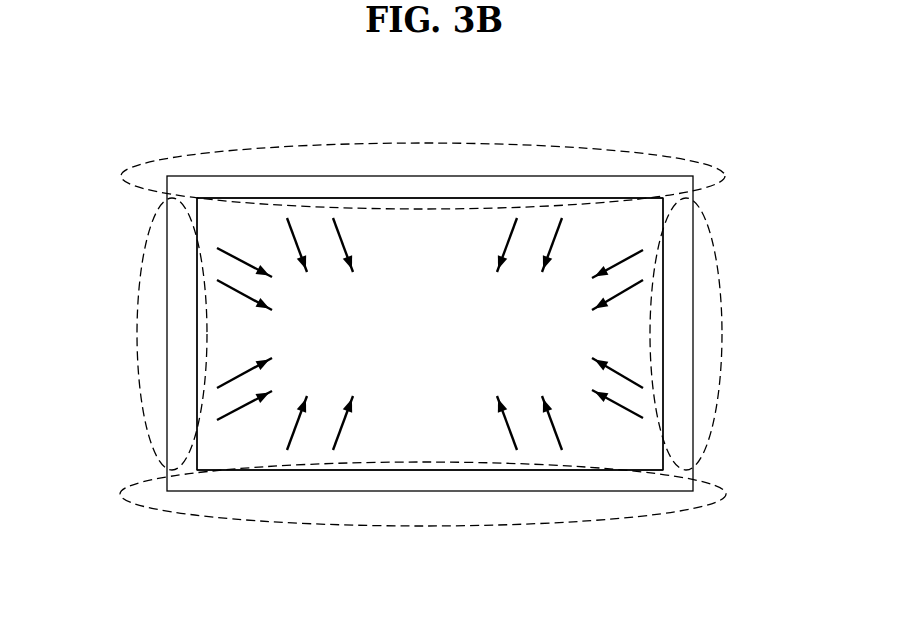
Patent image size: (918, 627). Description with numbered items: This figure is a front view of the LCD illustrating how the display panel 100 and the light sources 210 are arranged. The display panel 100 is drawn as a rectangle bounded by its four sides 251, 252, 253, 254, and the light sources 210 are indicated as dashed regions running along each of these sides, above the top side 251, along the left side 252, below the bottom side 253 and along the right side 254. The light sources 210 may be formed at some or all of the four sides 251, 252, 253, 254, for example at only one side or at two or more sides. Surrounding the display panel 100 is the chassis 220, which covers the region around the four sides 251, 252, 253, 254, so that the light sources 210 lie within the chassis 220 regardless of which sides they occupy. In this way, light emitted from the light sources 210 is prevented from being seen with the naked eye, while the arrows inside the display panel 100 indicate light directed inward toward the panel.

The display panel 100 is at (258, 227).
The light sources 210 is at (403, 160).
The chassis 220 is at (614, 177).
The first side 251 is at (483, 197).
The second side 252 is at (197, 353).
The third side 253 is at (487, 472).
The fourth side 254 is at (663, 355).